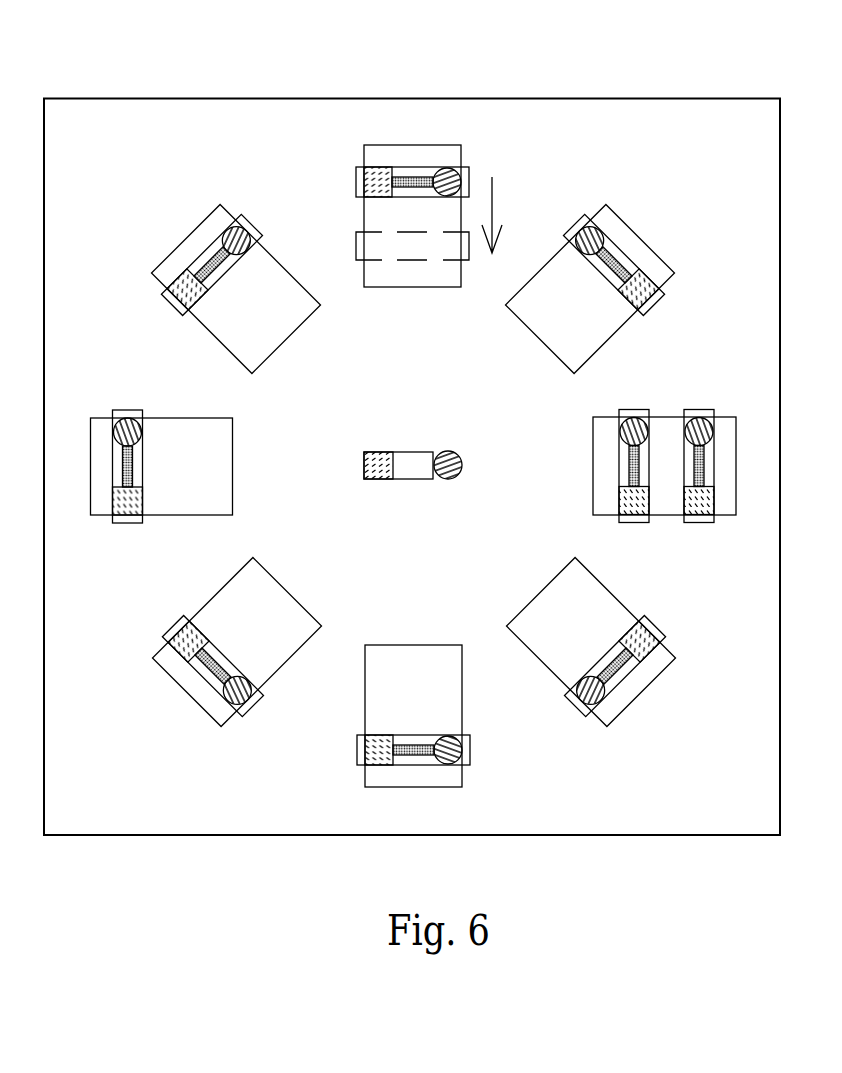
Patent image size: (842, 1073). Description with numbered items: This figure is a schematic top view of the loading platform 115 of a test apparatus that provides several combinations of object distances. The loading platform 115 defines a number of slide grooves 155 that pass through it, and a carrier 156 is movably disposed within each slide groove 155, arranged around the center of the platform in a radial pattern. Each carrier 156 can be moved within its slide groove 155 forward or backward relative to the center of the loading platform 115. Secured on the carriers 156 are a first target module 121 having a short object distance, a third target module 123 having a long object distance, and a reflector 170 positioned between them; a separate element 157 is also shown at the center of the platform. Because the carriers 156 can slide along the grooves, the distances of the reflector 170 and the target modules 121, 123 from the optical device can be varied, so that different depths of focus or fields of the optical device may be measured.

The loading platform 115 is at (688, 108).
The slide groove 155 is at (420, 272).
The carrier 156 is at (360, 185).
The component body 157 is at (407, 462).
The first target module 121 is at (647, 285).
The third target module 123 is at (588, 232).
The reflector 170 is at (622, 260).